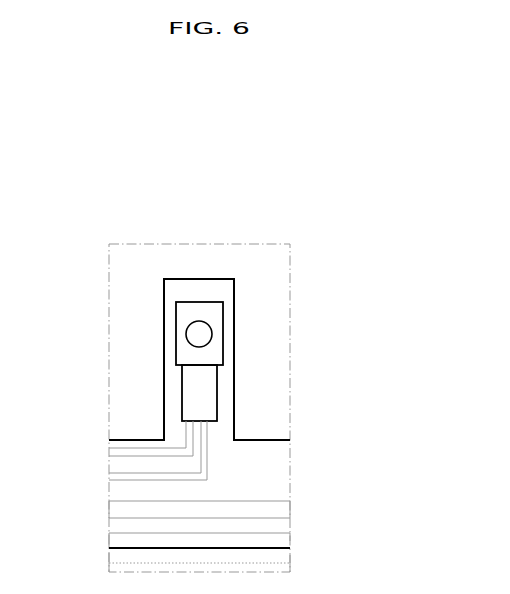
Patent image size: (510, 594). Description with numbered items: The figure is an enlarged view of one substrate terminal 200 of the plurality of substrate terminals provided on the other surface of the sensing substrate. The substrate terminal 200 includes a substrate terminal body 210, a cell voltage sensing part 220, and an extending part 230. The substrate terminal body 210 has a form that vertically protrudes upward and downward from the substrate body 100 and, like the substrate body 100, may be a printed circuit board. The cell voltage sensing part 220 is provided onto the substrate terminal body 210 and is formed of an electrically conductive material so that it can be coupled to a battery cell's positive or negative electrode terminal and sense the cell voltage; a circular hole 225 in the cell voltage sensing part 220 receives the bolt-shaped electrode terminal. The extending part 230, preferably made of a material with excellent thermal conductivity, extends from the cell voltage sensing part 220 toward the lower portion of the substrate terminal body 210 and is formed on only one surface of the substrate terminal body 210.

The substrate body 100 is at (267, 523).
The substrate terminal 200 is at (262, 268).
The substrate terminal body 210 is at (163, 401).
The cell voltage sensing part 220 is at (229, 322).
The circular hole 225 is at (188, 331).
The extending part 230 is at (213, 389).